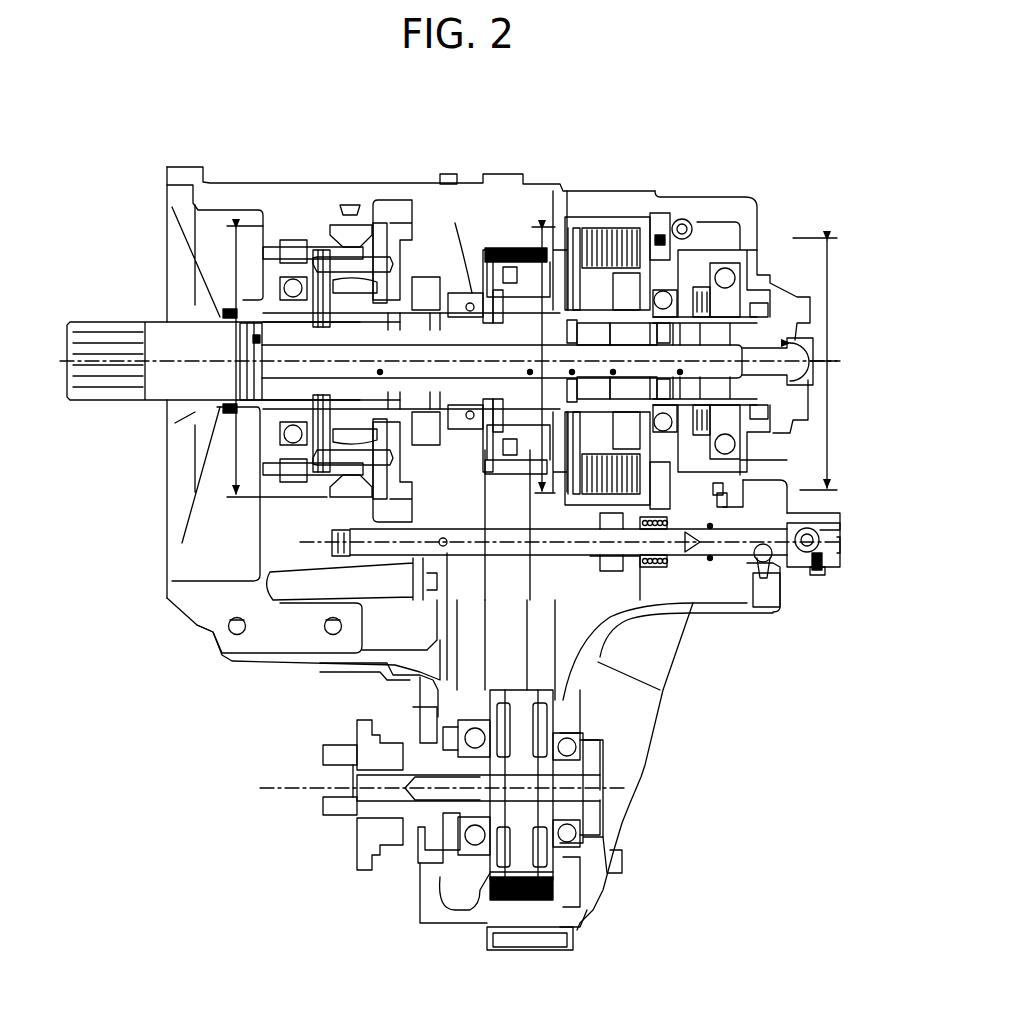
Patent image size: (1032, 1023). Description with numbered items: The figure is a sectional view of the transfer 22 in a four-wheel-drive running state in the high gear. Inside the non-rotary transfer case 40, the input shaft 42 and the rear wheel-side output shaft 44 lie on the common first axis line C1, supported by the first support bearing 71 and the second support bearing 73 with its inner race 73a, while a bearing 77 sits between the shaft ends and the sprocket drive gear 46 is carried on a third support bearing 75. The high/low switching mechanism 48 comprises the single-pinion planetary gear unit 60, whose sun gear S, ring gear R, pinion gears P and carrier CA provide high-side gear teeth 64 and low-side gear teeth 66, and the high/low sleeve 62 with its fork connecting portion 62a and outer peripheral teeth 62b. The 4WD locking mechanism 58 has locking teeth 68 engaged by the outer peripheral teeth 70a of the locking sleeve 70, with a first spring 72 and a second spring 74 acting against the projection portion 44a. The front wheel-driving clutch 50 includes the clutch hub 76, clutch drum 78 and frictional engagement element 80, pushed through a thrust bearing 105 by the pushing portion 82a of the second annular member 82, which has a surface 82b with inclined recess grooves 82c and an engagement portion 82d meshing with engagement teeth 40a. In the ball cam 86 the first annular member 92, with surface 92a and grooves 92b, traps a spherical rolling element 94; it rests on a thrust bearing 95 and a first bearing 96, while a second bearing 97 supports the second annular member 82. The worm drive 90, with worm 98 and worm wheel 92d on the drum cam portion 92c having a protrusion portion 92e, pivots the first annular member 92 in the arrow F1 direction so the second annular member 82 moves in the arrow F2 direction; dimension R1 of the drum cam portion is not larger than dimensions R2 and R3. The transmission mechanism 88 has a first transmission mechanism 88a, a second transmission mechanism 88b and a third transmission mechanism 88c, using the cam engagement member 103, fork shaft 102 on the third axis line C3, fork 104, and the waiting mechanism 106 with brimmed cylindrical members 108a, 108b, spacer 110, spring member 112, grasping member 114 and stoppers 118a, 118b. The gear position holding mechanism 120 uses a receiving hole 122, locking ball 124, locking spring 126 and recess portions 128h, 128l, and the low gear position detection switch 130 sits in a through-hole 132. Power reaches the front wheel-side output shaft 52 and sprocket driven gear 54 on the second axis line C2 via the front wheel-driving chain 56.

The transfer 22 is at (760, 134).
The transfer case 40 is at (287, 203).
The engagement teeth 40a is at (667, 220).
The input shaft 42 is at (153, 327).
The rear wheel-side output shaft 44 is at (807, 387).
The projection portion 44a is at (520, 427).
The sprocket drive gear 46 is at (513, 248).
The high/low switching mechanism 48 is at (402, 200).
The front wheel-driving clutch 50 is at (610, 213).
The front wheel-side output shaft 52 is at (363, 780).
The sprocket driven gear 54 is at (430, 708).
The front wheel-driving chain 56 is at (455, 808).
The 4WD locking mechanism 58 is at (471, 253).
The single-pinion planetary gear unit 60 is at (372, 210).
The high/low sleeve 62 is at (397, 493).
The fork connecting portion 62a is at (425, 280).
The outer peripheral teeth 62b is at (373, 220).
The high-side gear teeth 64 is at (350, 218).
The low-side gear teeth 66 is at (388, 313).
The locking teeth 68 is at (456, 244).
The locking sleeve 70 is at (473, 407).
The outer peripheral teeth 70a is at (470, 290).
The first support bearing 71 is at (277, 288).
The first spring 72 is at (433, 313).
The second support bearing 73 is at (723, 443).
The inner race 73a is at (727, 313).
The second spring 74 is at (467, 420).
The third support bearing 75 is at (535, 307).
The clutch hub 76 is at (590, 430).
The bearing 77 is at (293, 402).
The clutch drum 78 is at (557, 480).
The frictional engagement element 80 is at (600, 278).
The second annular member 82 is at (637, 315).
The pushing portion 82a is at (643, 227).
The surface 82b is at (570, 430).
The inclined recess grooves 82c is at (647, 447).
The engagement portion 82d is at (650, 260).
The ball cam 86 is at (695, 320).
The transmission mechanism 88 is at (667, 663).
The first transmission mechanism 88a is at (640, 277).
The second transmission mechanism 88b is at (560, 590).
The third transmission mechanism 88c is at (297, 590).
The worm drive 90 is at (707, 228).
The first annular member 92 is at (667, 323).
The surface 92a is at (677, 260).
The inclined recess grooves 92b is at (723, 300).
The drum cam portion 92c is at (787, 512).
The worm wheel 92d is at (653, 252).
The protrusion portion 92e is at (735, 495).
The spherical rolling element 94 is at (663, 300).
The thrust bearing 95 is at (702, 437).
The first bearing 96 is at (700, 410).
The second bearing 97 is at (665, 398).
The worm 98 is at (672, 217).
The fork shaft 102 is at (503, 547).
The cam engagement member 103 is at (727, 487).
The fork 104 is at (507, 525).
The thrust bearing 105 is at (563, 277).
The waiting mechanism 106 is at (690, 565).
The brimmed cylindrical member 108a is at (657, 642).
The brimmed cylindrical member 108b is at (694, 600).
The cylindrical spacer 110 is at (603, 533).
The spring member 112 is at (613, 556).
The grasping member 114 is at (643, 517).
The stopper 118a is at (603, 667).
The stopper 118b is at (718, 560).
The gear position holding mechanism 120 is at (750, 605).
The receiving hole 122 is at (762, 598).
The locking ball 124 is at (712, 580).
The locking spring 126 is at (812, 575).
The recess portion 128h is at (773, 495).
The recess portion 128l is at (722, 545).
The low gear position detection switch 130 is at (810, 580).
The through-hole 132 is at (817, 573).
The first axis line C1 is at (166, 360).
The second axis line C2 is at (340, 792).
The third axis line C3 is at (380, 533).
The carrier CA is at (410, 193).
The arrow F1 direction F1 is at (782, 344).
The arrow F2 direction F2 is at (707, 600).
The pinion gears P is at (333, 232).
The ring gear R is at (343, 237).
The dimension R1 is at (841, 361).
The dimension R2 is at (187, 350).
The dimension R3 is at (537, 353).
The sun gear S is at (310, 278).